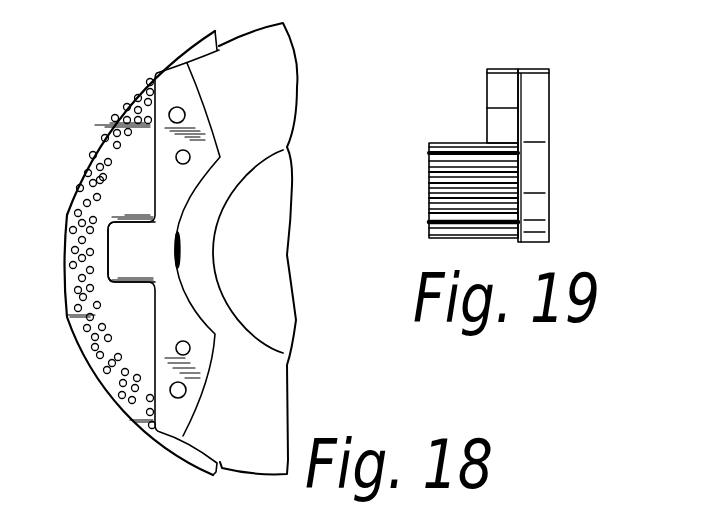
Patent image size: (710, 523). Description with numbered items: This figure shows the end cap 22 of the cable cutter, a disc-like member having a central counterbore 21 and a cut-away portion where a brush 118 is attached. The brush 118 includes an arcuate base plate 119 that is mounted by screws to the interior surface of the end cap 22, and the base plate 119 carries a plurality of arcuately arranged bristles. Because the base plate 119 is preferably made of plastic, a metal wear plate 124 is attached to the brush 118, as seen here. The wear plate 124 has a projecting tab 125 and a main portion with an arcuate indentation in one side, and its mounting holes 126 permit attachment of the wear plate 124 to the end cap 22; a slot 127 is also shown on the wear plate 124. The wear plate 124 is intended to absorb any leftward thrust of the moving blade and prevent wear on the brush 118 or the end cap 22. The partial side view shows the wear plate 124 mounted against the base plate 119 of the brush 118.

In FIG. 18, the central counterbore 21 is at (263, 285).
In FIG. 18, the end cap 22 is at (277, 40).
In FIG. 19, the brush 118 is at (566, 125).
In FIG. 19, the arcuate base plate 119 is at (533, 173).
In FIG. 18, the wear plate 124 is at (213, 353).
In FIG. 19, the wear plate 124 is at (488, 93).
In FIG. 18, the projecting tab 125 is at (110, 268).
In FIG. 18, the mounting holes 126 is at (189, 153).
In FIG. 18, the slot 127 is at (180, 250).